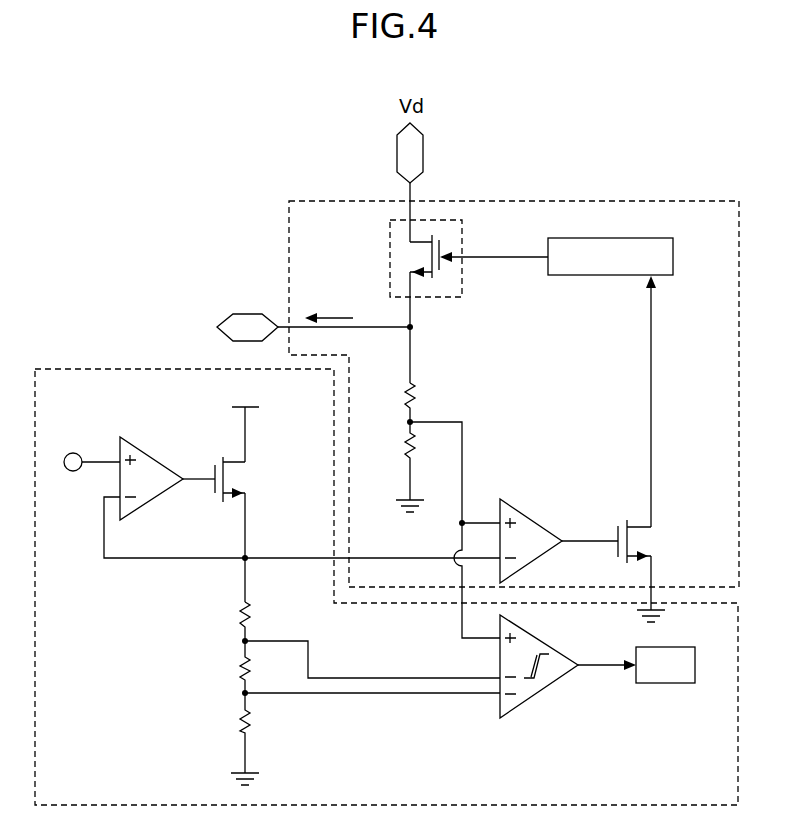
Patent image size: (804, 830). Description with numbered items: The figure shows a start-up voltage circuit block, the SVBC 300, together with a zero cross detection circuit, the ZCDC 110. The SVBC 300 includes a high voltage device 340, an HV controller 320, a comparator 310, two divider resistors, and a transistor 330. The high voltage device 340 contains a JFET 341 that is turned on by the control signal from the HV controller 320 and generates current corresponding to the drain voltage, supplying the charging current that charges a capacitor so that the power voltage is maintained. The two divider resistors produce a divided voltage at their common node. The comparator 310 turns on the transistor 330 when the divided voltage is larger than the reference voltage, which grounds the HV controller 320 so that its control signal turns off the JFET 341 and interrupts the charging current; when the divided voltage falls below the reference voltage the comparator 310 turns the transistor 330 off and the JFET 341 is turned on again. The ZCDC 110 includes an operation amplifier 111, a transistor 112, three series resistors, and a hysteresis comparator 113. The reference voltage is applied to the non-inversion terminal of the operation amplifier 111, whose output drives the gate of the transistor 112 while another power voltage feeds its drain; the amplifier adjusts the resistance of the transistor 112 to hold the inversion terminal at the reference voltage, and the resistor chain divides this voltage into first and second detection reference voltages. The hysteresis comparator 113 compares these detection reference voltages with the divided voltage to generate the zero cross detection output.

The ZCDC 110 is at (68, 368).
The operation amplifier 111 is at (145, 450).
The transistor 112 is at (257, 478).
The hysteresis comparator 113 is at (555, 685).
The SVBC 300 is at (540, 200).
The comparator 310 is at (528, 515).
The HV controller 320 is at (627, 237).
The transistor 330 is at (656, 543).
The high voltage device 340 is at (452, 220).
The junction gate field-effect transistor 341 is at (398, 250).